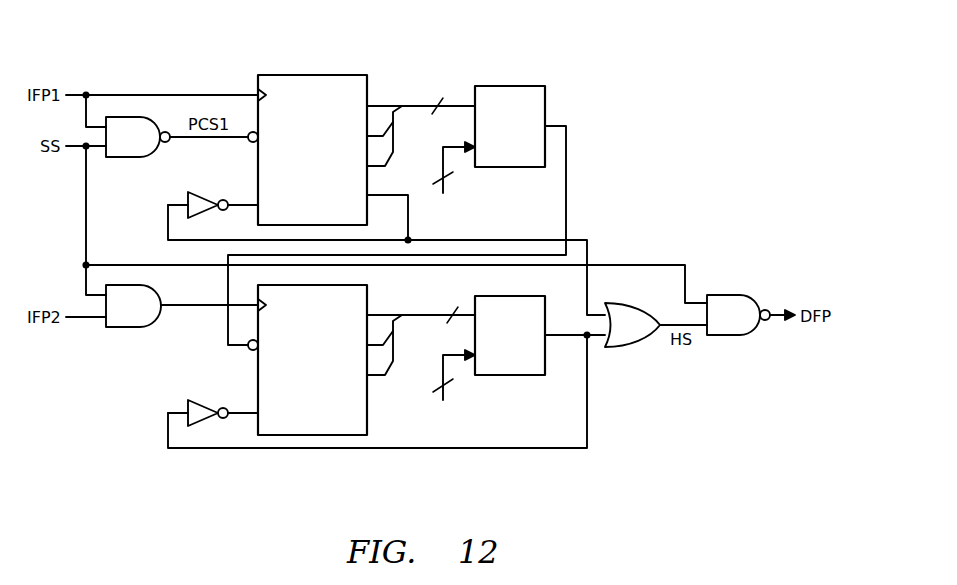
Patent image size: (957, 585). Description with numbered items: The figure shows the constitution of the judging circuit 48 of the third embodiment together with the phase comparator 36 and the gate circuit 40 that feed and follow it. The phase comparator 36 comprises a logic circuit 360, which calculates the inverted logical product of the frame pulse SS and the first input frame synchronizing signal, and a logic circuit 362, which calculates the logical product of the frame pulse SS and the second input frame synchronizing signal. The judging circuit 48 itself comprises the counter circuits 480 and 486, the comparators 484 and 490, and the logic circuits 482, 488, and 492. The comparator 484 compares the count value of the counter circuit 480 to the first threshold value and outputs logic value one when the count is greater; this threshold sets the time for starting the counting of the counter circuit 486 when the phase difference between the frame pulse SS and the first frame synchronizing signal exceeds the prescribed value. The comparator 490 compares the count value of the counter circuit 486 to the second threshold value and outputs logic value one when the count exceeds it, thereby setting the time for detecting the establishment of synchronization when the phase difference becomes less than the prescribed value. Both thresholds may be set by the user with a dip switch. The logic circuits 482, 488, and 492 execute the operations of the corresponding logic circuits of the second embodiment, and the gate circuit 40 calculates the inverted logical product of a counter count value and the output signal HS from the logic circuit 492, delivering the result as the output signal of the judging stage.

The logic circuit 360 is at (132, 158).
The logic circuit 362 is at (132, 328).
The counter circuit 480 is at (314, 74).
The logic circuit 482 is at (204, 192).
The comparator 484 is at (510, 85).
The counter circuit 486 is at (369, 299).
The logic circuit 488 is at (204, 400).
The comparator 490 is at (510, 376).
The logic circuit 492 is at (638, 348).
The gate circuit 40 is at (727, 336).
The phase comparator 36 is at (137, 443).
The judging circuit 48 is at (346, 464).